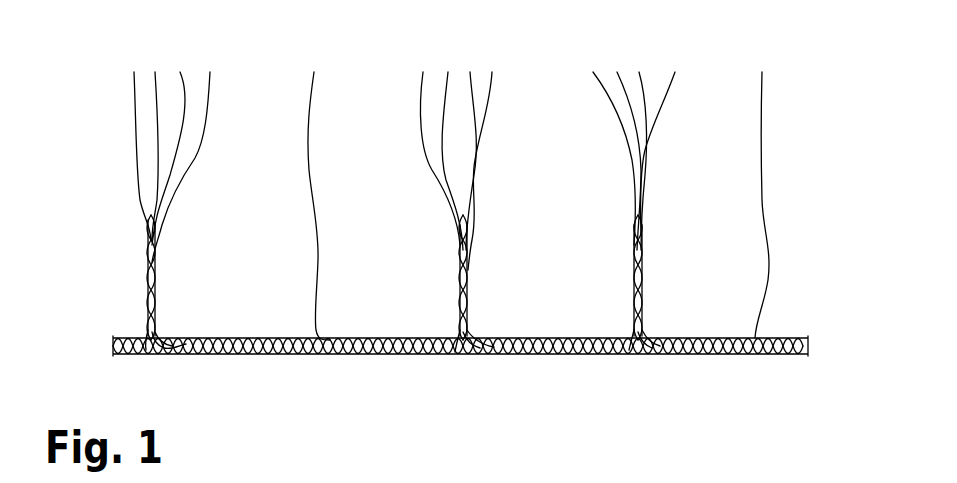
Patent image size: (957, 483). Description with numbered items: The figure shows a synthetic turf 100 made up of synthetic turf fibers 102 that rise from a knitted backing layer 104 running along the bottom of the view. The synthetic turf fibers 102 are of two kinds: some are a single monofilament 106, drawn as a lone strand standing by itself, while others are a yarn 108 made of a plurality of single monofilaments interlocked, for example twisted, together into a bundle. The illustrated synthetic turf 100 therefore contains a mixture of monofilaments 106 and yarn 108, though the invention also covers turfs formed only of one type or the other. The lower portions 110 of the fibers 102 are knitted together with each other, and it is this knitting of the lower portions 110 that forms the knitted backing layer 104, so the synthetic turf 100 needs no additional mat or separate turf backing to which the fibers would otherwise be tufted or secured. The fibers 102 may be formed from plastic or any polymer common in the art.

The synthetic turf 100 is at (463, 217).
The synthetic turf fibers 102 is at (128, 108).
The knitted backing layer 104 is at (710, 355).
The single monofilament 106 is at (322, 206).
The yarn 108 is at (155, 275).
The lower portions of the fibers 110 is at (145, 318).